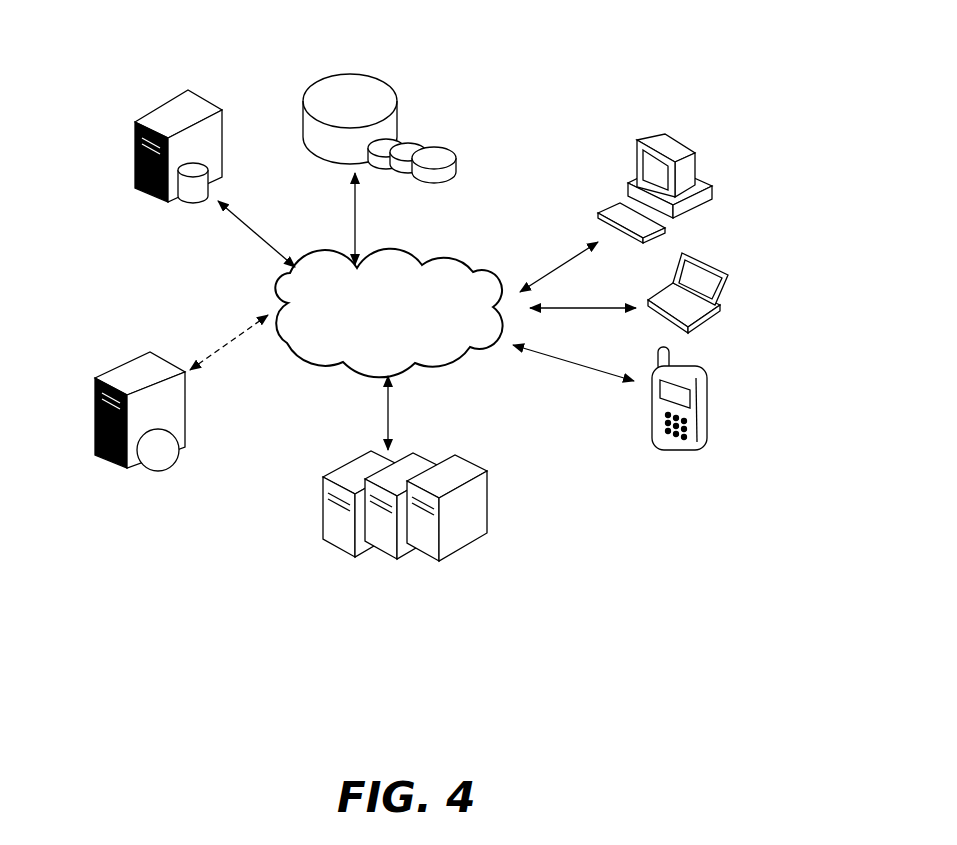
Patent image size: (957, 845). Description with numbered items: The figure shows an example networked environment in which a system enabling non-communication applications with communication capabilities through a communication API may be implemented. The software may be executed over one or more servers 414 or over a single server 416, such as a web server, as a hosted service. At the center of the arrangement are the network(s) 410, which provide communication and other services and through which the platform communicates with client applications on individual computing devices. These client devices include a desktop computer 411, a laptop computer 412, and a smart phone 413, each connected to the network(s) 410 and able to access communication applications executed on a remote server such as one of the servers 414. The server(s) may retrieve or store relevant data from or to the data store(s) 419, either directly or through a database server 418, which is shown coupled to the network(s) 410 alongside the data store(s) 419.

The network(s) 410 is at (396, 238).
The desktop computer 411 is at (698, 127).
The laptop computer 412 is at (733, 248).
The smart phone 413 is at (703, 362).
The servers 414 is at (351, 451).
The single server 416 is at (117, 358).
The database server 418 is at (190, 212).
The data store(s) 419 is at (367, 55).